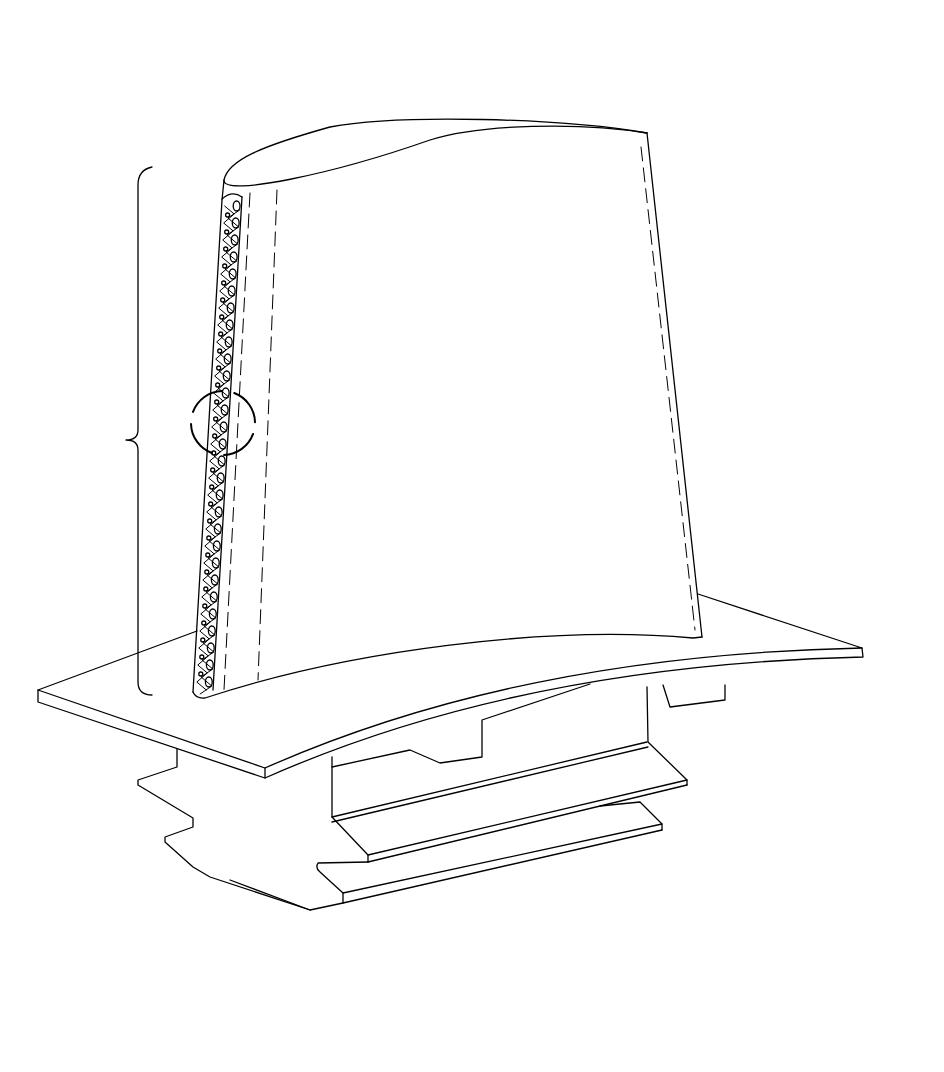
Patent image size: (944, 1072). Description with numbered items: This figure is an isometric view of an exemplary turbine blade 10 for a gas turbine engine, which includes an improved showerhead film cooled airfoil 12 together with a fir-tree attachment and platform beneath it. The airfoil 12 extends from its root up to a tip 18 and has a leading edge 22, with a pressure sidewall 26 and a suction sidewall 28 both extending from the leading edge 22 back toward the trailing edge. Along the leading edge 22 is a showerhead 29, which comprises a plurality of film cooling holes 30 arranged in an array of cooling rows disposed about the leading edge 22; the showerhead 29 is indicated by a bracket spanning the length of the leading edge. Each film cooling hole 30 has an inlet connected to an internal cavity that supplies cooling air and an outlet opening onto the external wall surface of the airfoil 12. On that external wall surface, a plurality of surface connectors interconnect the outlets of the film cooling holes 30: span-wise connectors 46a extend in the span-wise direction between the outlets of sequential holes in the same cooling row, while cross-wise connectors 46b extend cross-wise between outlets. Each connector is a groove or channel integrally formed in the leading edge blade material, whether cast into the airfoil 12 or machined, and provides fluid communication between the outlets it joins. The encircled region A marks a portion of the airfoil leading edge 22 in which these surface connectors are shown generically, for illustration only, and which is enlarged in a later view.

The turbine blade 10 is at (705, 194).
The airfoil 12 is at (676, 307).
The tip 18 is at (270, 160).
The leading edge 22 is at (195, 650).
The pressure sidewall 26 is at (583, 252).
The suction sidewall 28 is at (565, 150).
The showerhead 29 is at (121, 431).
The film cooling hole 30 is at (225, 222).
The span-wise connector 46a is at (225, 280).
The cross-wise connector 46b is at (235, 335).
The encircled region A is at (257, 420).